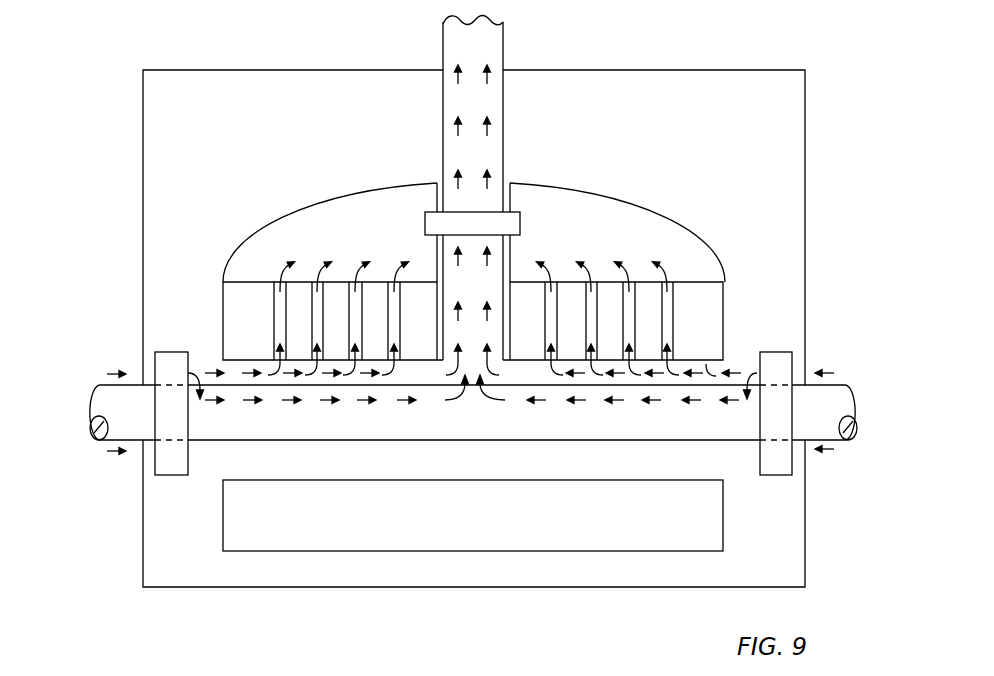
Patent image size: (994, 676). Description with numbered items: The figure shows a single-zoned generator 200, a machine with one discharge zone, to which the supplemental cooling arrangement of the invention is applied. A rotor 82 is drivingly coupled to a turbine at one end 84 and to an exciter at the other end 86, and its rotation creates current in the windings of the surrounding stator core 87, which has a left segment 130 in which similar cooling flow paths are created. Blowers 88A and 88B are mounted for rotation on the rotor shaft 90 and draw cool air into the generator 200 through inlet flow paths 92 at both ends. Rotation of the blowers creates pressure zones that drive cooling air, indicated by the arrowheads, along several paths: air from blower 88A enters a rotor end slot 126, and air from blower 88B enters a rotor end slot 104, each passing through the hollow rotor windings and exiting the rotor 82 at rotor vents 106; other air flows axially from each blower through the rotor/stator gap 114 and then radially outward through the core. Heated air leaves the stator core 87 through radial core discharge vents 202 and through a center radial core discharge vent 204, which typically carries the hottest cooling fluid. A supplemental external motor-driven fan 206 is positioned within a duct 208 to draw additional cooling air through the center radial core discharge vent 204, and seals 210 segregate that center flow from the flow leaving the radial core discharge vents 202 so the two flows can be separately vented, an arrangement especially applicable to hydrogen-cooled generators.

The generator 200 is at (172, 619).
The duct 208 is at (503, 96).
The seals 210 is at (435, 260).
The supplemental external motor-driven fan 206 is at (520, 223).
The center radial core discharge vent 204 is at (505, 320).
The stator core 87 is at (223, 300).
The radial core discharge vents 202 is at (388, 335).
The left segment of the stator core 130 is at (335, 552).
The rotor 82 is at (748, 442).
The end 86 is at (98, 442).
The end 84 is at (855, 435).
The blower 88A is at (172, 477).
The blower 88B is at (778, 477).
The inlet flow paths 92 is at (120, 372).
The rotor end slot 126 is at (200, 405).
The rotor end slot 104 is at (747, 404).
The rotor vents 106 is at (475, 395).
The rotor/stator gap 114 is at (517, 378).
The rotor shaft 90 is at (380, 432).